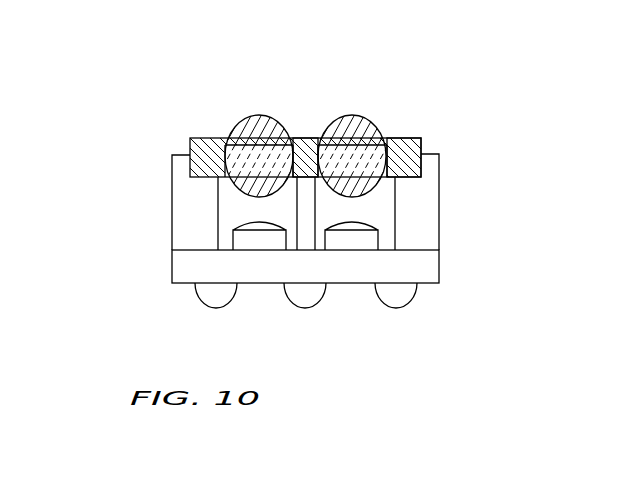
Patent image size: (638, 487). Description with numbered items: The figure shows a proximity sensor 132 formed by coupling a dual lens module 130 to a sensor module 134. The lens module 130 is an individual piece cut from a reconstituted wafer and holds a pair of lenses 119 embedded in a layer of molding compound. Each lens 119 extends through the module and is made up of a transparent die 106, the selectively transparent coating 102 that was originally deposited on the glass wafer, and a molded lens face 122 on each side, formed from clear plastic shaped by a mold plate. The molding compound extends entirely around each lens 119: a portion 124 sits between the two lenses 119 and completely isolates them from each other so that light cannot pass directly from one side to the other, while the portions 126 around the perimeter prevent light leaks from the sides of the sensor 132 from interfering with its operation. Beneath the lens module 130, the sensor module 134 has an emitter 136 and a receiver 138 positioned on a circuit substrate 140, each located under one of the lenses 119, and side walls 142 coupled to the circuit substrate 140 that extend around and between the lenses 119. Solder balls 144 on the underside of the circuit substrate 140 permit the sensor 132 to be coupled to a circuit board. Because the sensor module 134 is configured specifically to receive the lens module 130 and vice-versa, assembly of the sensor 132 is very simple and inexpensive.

The dual lens module 130 is at (394, 58).
The proximity sensor 132 is at (97, 148).
The sensor module 134 is at (498, 302).
The selectively transparent coating 102 is at (218, 138).
The transparent die 106 is at (388, 145).
The lens 119 is at (238, 96).
The portion of molding compound between the lenses 124 is at (306, 136).
The portions of molding compound around the perimeter 126 is at (416, 160).
The side walls 142 is at (418, 228).
The lens face 122 is at (244, 198).
The emitter 136 is at (257, 240).
The receiver 138 is at (351, 240).
The circuit substrate 140 is at (180, 278).
The solder balls 144 is at (402, 302).